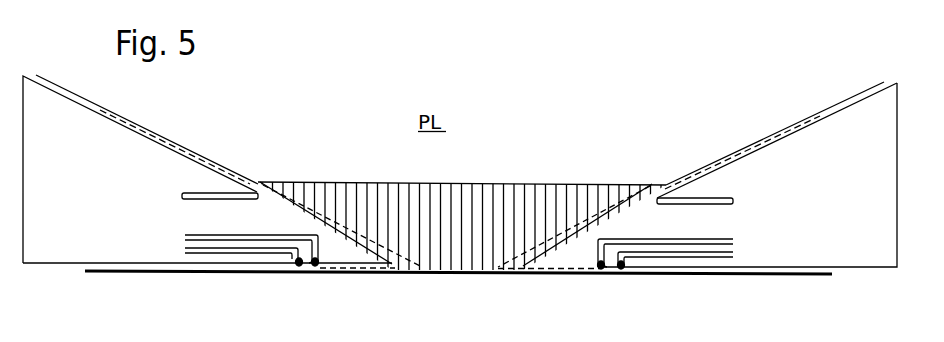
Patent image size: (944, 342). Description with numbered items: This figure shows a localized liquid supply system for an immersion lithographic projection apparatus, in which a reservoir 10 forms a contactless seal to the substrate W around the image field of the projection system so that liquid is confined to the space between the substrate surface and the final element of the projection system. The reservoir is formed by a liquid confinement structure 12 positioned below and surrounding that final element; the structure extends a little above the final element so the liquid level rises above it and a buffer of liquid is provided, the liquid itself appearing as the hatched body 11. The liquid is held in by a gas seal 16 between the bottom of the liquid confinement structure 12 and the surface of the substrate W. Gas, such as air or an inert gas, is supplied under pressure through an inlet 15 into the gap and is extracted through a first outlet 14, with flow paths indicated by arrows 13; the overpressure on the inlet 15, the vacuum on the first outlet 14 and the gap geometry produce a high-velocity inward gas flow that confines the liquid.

The reservoir 10 is at (138, 297).
The filler body 11 is at (454, 233).
The liquid confinement structure 12 is at (881, 268).
The upper flange 13 is at (181, 196).
The first outlet 14 is at (756, 242).
The inlet 15 is at (773, 255).
The gas seal 16 is at (303, 270).
The substrate W is at (563, 274).